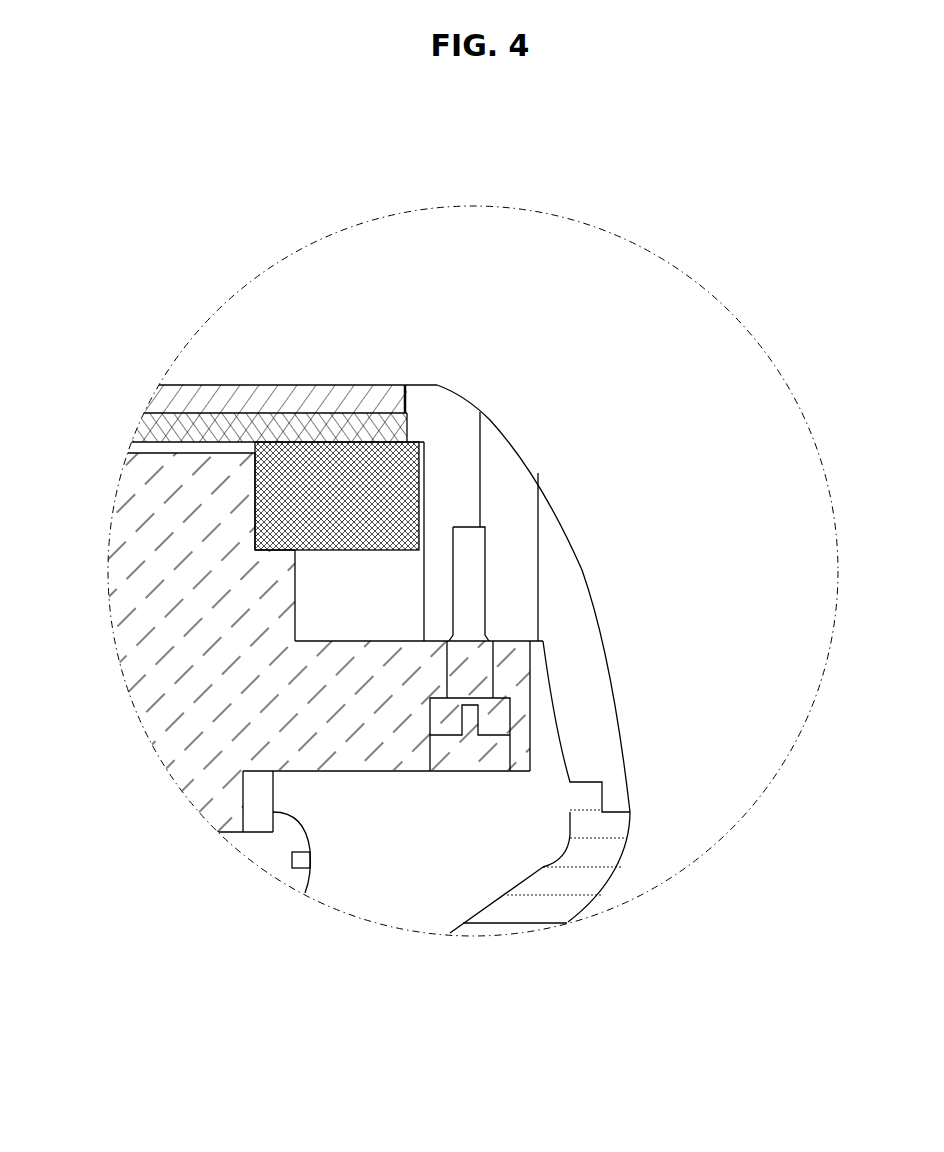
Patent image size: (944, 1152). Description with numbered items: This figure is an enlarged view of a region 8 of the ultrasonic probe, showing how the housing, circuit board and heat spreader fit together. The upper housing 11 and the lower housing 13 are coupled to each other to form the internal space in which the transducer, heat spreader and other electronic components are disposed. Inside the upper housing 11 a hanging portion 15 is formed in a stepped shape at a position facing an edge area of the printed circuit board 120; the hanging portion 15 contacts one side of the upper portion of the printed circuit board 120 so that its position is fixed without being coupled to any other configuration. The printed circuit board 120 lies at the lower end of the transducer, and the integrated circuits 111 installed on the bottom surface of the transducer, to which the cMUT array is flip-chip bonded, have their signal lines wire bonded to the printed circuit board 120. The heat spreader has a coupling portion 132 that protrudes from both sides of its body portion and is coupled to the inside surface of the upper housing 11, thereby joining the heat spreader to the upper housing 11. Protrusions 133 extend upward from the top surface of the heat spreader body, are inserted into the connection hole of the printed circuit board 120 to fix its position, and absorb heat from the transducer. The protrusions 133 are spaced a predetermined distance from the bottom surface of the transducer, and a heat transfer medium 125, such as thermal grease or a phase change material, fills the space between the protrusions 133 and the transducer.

The enlarged portion 8 is at (478, 207).
The upper housing 11 is at (522, 517).
The lower housing 13 is at (530, 913).
The hanging portion 15 is at (415, 440).
The integrated circuits 111 is at (158, 428).
The printed circuit board 120 is at (360, 552).
The heat transfer medium 125 is at (200, 448).
The coupling portion 132 is at (385, 771).
The protrusions 133 is at (147, 543).